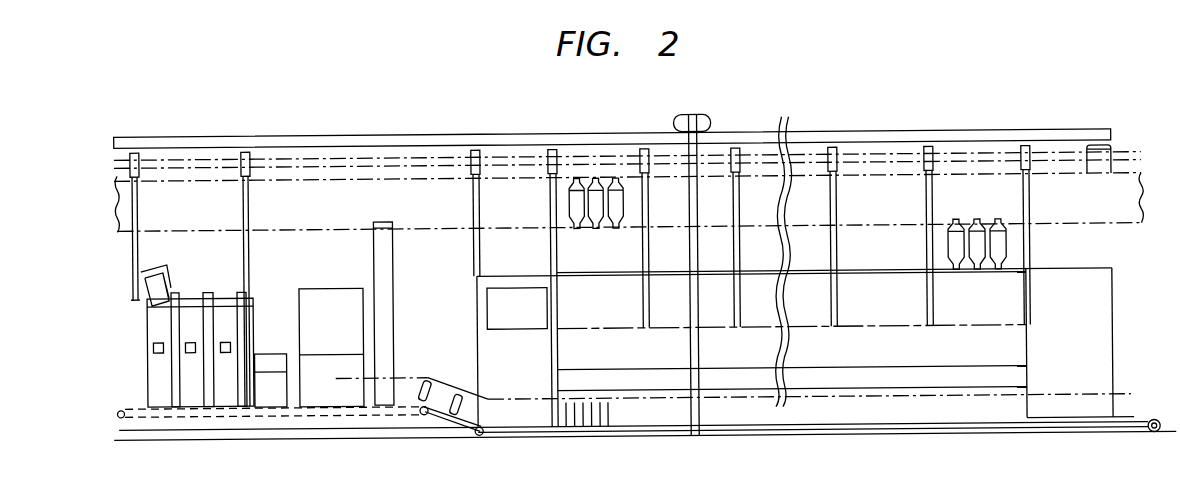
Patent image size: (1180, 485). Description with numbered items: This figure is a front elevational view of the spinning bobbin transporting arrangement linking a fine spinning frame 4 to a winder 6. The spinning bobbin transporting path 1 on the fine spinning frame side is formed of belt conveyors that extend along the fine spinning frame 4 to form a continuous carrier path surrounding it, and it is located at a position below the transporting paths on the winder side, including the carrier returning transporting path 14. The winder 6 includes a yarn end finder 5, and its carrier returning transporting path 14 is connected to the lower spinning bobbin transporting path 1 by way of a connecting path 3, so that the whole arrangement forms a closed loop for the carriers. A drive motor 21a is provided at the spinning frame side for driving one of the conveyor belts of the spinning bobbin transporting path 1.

The spinning bobbin transporting path 1 is at (878, 430).
The connecting path 3 is at (441, 410).
The fine spinning frame 4 is at (889, 361).
The yarn end finder 5 is at (325, 281).
The winder 6 is at (196, 281).
The carrier returning transporting path 14 is at (411, 393).
The drive motor 21a is at (1153, 423).